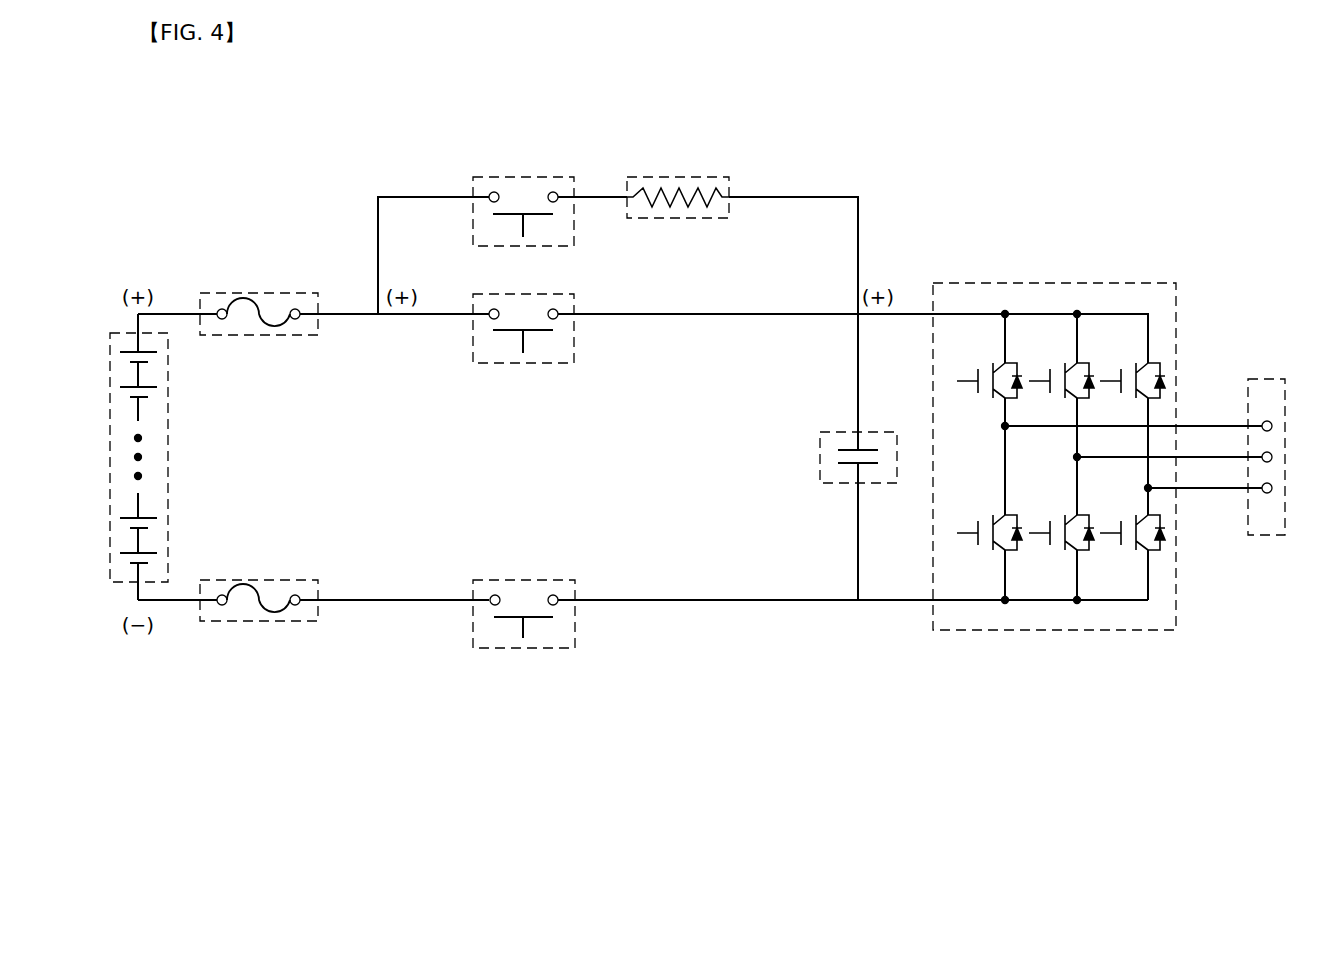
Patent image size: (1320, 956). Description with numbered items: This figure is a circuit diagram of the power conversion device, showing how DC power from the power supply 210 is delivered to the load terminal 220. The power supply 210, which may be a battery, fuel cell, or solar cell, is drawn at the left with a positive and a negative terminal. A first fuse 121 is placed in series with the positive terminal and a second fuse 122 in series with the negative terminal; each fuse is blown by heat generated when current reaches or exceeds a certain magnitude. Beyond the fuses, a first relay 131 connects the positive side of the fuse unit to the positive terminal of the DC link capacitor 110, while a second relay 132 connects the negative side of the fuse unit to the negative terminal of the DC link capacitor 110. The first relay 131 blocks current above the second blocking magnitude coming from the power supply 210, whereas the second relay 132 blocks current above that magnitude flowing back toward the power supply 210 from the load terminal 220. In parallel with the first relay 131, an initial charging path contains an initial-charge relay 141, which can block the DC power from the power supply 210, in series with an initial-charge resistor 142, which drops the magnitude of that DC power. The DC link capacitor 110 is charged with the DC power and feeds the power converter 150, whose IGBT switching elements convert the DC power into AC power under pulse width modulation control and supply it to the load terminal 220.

The DC link capacitor 110 is at (820, 456).
The first fuse 121 is at (247, 336).
The second fuse 122 is at (247, 622).
The first relay 131 is at (523, 364).
The second relay 132 is at (523, 649).
The initial-charge relay 141 is at (523, 176).
The initial-charge resistor 142 is at (678, 176).
The power converter 150 is at (1047, 282).
The power supply 210 is at (168, 465).
The load terminal 220 is at (1275, 378).